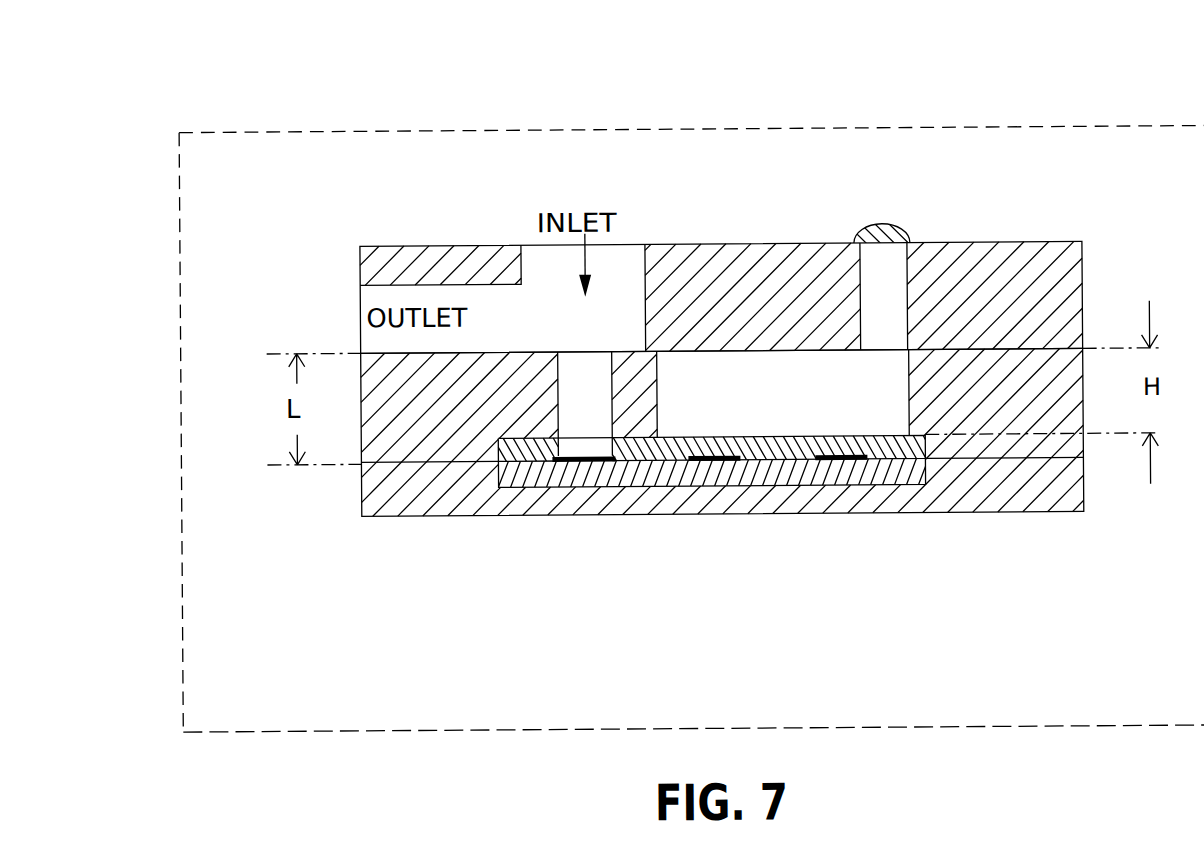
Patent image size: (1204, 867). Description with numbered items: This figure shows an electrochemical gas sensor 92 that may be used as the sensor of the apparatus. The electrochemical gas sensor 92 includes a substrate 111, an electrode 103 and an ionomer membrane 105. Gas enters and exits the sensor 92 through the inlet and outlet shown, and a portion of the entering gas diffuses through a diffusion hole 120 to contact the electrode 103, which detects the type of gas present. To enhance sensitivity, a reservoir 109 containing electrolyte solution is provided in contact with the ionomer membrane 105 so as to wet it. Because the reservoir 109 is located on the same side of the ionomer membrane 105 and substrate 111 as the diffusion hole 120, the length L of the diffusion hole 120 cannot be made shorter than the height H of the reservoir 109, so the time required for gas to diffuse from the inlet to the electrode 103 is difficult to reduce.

The electrochemical gas sensor 92 is at (710, 108).
The diffusion hole 120 is at (586, 372).
The reservoir 109 is at (883, 365).
The ionomer membrane 105 is at (528, 450).
The electrode 103 is at (584, 461).
The substrate 111 is at (880, 470).